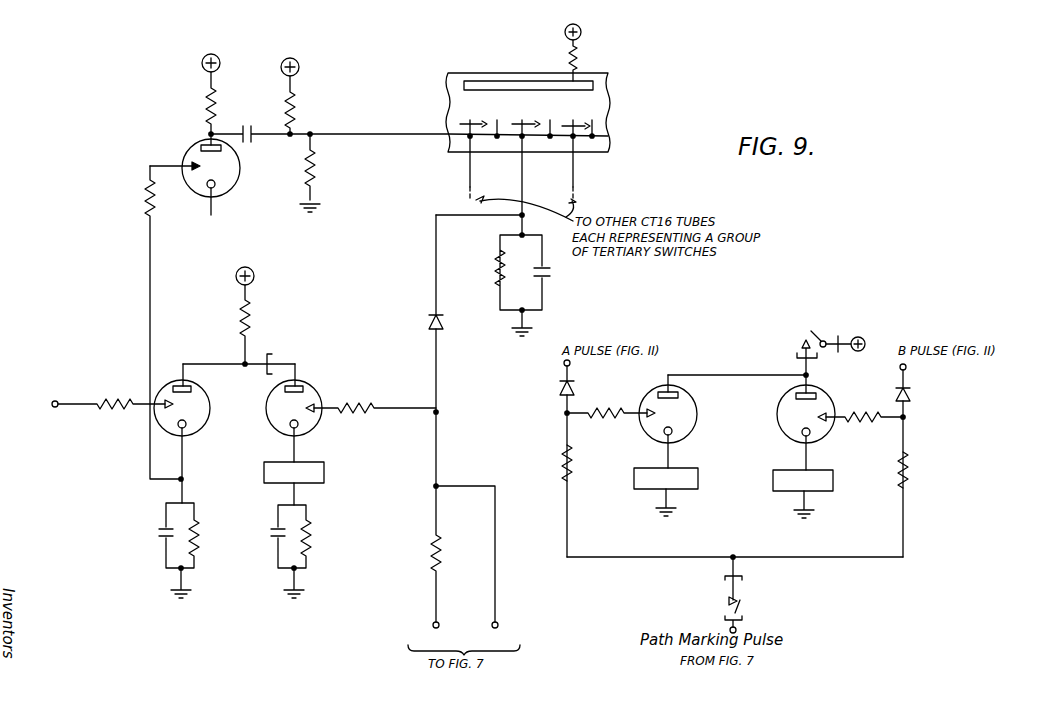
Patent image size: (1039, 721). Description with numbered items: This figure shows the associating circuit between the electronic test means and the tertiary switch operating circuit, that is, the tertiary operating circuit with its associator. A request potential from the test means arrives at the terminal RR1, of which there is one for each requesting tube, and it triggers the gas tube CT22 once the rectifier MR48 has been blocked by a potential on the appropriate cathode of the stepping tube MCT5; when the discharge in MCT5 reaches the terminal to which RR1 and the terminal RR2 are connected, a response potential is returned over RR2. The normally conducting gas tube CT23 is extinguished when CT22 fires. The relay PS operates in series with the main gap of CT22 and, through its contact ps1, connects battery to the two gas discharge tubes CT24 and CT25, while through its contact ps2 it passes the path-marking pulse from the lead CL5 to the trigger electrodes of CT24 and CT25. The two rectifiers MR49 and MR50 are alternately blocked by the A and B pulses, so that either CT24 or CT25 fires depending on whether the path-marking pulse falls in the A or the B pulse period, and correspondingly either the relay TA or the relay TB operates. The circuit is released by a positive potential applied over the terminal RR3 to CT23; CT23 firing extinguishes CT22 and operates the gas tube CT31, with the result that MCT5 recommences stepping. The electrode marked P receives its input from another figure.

The gas tube CT31 is at (190, 266).
The P input from FIG. 11 P is at (207, 236).
The multi-cathode tube MCT5 is at (528, 129).
The rectifier MR48 is at (409, 274).
The terminal RR1 is at (431, 567).
The terminal RR2 is at (470, 567).
The terminal RR3 is at (82, 402).
The gas tube CT23 is at (182, 423).
The gas tube CT22 is at (351, 403).
The relay PS is at (363, 481).
The rectifier MR49 is at (591, 381).
The rectifier MR50 is at (925, 385).
The gas discharge tube CT24 is at (689, 421).
The gas discharge tube CT25 is at (823, 422).
The relay TA is at (730, 486).
The relay TB is at (858, 488).
The relay contact ps1 is at (831, 346).
The relay contact ps2 is at (751, 586).
The path-marking pulse lead CL5 is at (749, 626).